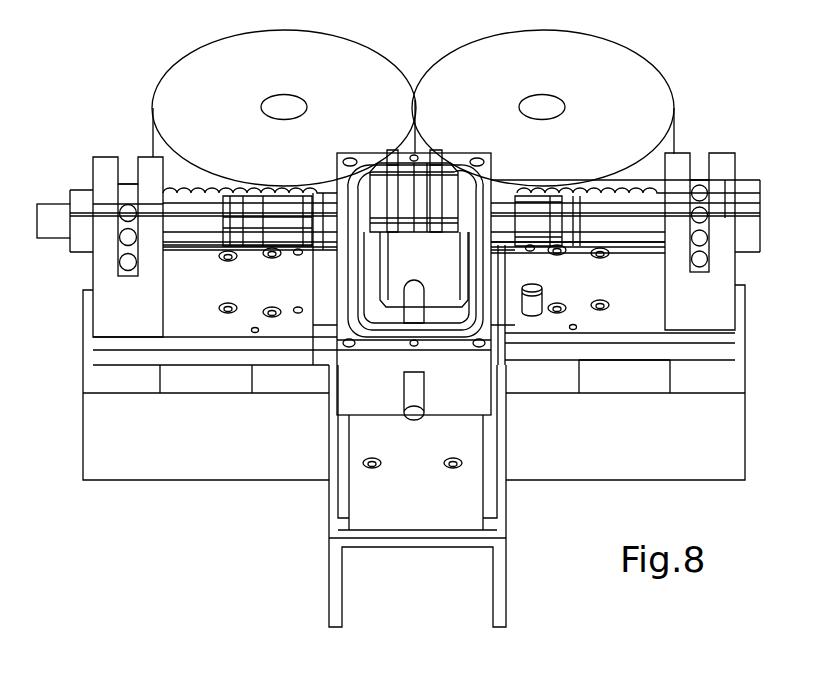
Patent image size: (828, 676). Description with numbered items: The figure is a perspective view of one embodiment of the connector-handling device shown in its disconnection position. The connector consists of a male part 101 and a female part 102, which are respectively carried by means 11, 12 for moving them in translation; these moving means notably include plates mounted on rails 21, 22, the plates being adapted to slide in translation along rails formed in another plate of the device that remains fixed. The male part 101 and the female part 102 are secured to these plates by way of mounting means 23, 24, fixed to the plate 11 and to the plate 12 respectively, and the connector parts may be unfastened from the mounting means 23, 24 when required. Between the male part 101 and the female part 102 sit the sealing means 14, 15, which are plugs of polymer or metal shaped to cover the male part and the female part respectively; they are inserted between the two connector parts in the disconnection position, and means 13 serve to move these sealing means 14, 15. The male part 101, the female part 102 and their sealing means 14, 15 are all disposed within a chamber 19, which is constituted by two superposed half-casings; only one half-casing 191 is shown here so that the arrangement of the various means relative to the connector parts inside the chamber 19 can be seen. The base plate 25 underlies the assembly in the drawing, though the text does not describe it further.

The male part 101 is at (128, 202).
The female part 102 is at (627, 188).
The means for moving the male part 11 is at (178, 312).
The means for moving the female part 12 is at (630, 322).
The means for moving the sealing means 13 is at (409, 263).
The sealing means 14 is at (393, 183).
The sealing means 15 is at (436, 183).
The chamber 19 is at (438, 313).
The half-casing 191 is at (347, 403).
The rail 21 is at (326, 330).
The rail 22 is at (500, 250).
The mounting means 23 is at (108, 280).
The mounting means 24 is at (722, 275).
The base plate 25 is at (142, 357).